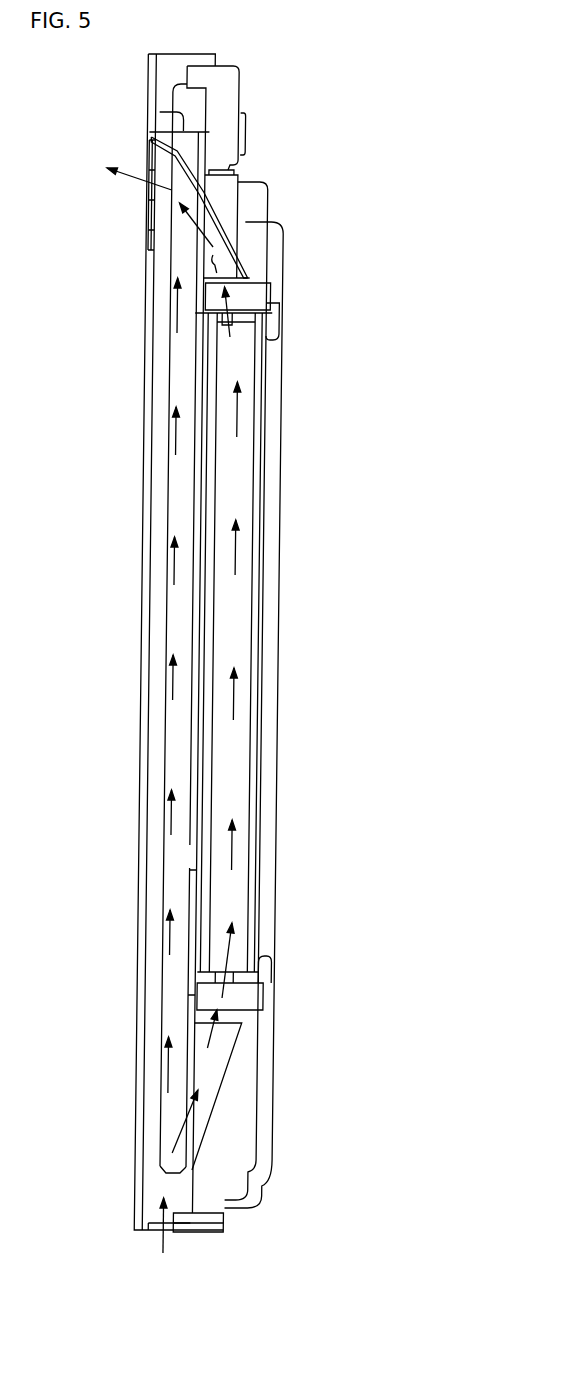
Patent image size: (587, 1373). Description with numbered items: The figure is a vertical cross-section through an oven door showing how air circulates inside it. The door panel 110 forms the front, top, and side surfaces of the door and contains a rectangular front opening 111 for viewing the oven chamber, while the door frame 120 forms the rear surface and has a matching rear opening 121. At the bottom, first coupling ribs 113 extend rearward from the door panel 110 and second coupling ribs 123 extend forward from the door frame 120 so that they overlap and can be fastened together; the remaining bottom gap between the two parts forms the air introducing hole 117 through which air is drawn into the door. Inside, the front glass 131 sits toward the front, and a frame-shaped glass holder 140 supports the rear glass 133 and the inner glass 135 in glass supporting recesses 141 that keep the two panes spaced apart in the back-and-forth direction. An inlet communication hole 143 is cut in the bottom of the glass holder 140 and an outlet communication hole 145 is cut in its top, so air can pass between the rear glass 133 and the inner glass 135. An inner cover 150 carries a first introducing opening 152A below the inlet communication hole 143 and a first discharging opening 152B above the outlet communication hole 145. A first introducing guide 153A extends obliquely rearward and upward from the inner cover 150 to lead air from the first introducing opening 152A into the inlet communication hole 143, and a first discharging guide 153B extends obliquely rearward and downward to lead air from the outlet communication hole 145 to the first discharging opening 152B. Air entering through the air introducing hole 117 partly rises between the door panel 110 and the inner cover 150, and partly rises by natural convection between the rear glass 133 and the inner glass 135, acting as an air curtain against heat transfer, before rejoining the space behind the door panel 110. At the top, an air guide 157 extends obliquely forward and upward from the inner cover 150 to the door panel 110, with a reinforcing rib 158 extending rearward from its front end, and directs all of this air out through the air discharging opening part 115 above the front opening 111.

The door panel 110 is at (146, 80).
The front opening 111 is at (147, 282).
The first coupling ribs 113 is at (152, 1230).
The air discharging opening part 115 is at (146, 207).
The air introducing hole 117 is at (180, 1232).
The door frame 120 is at (272, 218).
The rear opening 121 is at (285, 332).
The second coupling ribs 123 is at (205, 1232).
The front glass 131 is at (147, 467).
The rear glass 133 is at (258, 643).
The inner glass 135 is at (210, 630).
The glass holder 140 is at (272, 292).
The glass supporting recesses 141 is at (283, 320).
The inlet communication hole 143 is at (230, 973).
The outlet communication hole 145 is at (238, 318).
The inner cover 150 is at (190, 893).
The first introducing opening 152A is at (207, 1072).
The first discharging opening 152B is at (240, 250).
The first introducing guide 153A is at (233, 1063).
The first discharging guide 153B is at (236, 190).
The air guide 157 is at (200, 165).
The reinforcing rib 158 is at (170, 113).